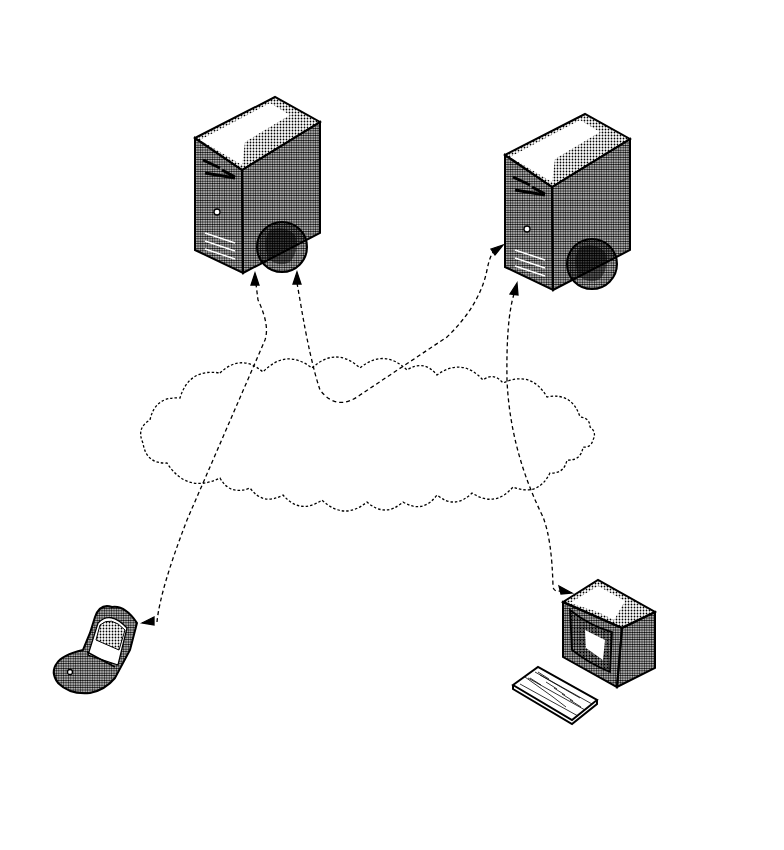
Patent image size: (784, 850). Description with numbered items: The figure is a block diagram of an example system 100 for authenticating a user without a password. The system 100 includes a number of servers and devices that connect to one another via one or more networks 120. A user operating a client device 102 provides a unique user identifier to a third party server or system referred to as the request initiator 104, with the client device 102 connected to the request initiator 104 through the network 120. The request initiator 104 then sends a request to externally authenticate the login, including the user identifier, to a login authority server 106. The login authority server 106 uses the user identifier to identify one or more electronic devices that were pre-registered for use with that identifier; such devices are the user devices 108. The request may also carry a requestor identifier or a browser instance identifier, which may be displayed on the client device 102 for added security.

The system environment 100 is at (122, 40).
The client device 102 is at (643, 600).
The request initiator 104 is at (615, 123).
The login authority server 106 is at (295, 103).
The user device 108 is at (117, 675).
The network 120 is at (388, 461).